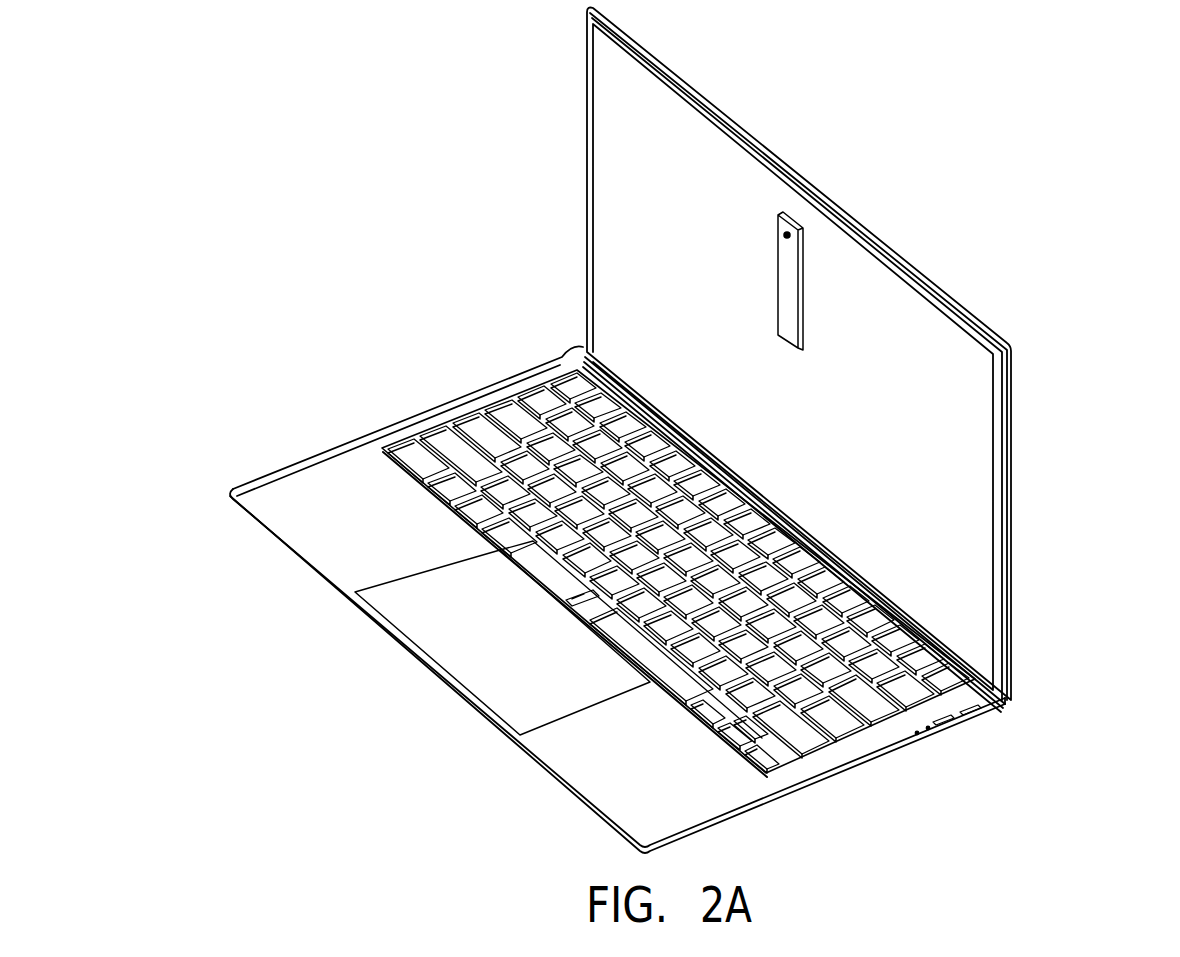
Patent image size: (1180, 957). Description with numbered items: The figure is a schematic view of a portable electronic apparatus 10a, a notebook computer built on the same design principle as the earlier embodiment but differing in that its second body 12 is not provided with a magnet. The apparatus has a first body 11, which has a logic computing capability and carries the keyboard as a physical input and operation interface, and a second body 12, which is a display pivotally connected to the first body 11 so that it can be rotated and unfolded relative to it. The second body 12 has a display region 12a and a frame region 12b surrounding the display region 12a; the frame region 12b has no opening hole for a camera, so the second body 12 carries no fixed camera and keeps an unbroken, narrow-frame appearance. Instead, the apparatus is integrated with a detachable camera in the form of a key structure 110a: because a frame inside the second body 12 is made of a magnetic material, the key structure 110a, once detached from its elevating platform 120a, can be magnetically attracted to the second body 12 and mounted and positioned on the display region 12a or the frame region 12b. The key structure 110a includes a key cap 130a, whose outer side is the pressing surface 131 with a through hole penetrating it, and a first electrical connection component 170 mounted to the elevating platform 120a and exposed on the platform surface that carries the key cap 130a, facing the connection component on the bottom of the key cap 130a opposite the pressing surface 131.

The portable electronic apparatus 10a is at (684, 438).
The first body 11 is at (617, 606).
The second body 12 is at (782, 360).
The display region 12a is at (604, 124).
The frame region 12b is at (673, 87).
The key structure 110a is at (625, 462).
The elevating platform 120a is at (527, 552).
The key cap 130a is at (788, 268).
The pressing surface 131 is at (770, 303).
The first electrical connection component 170 is at (557, 608).